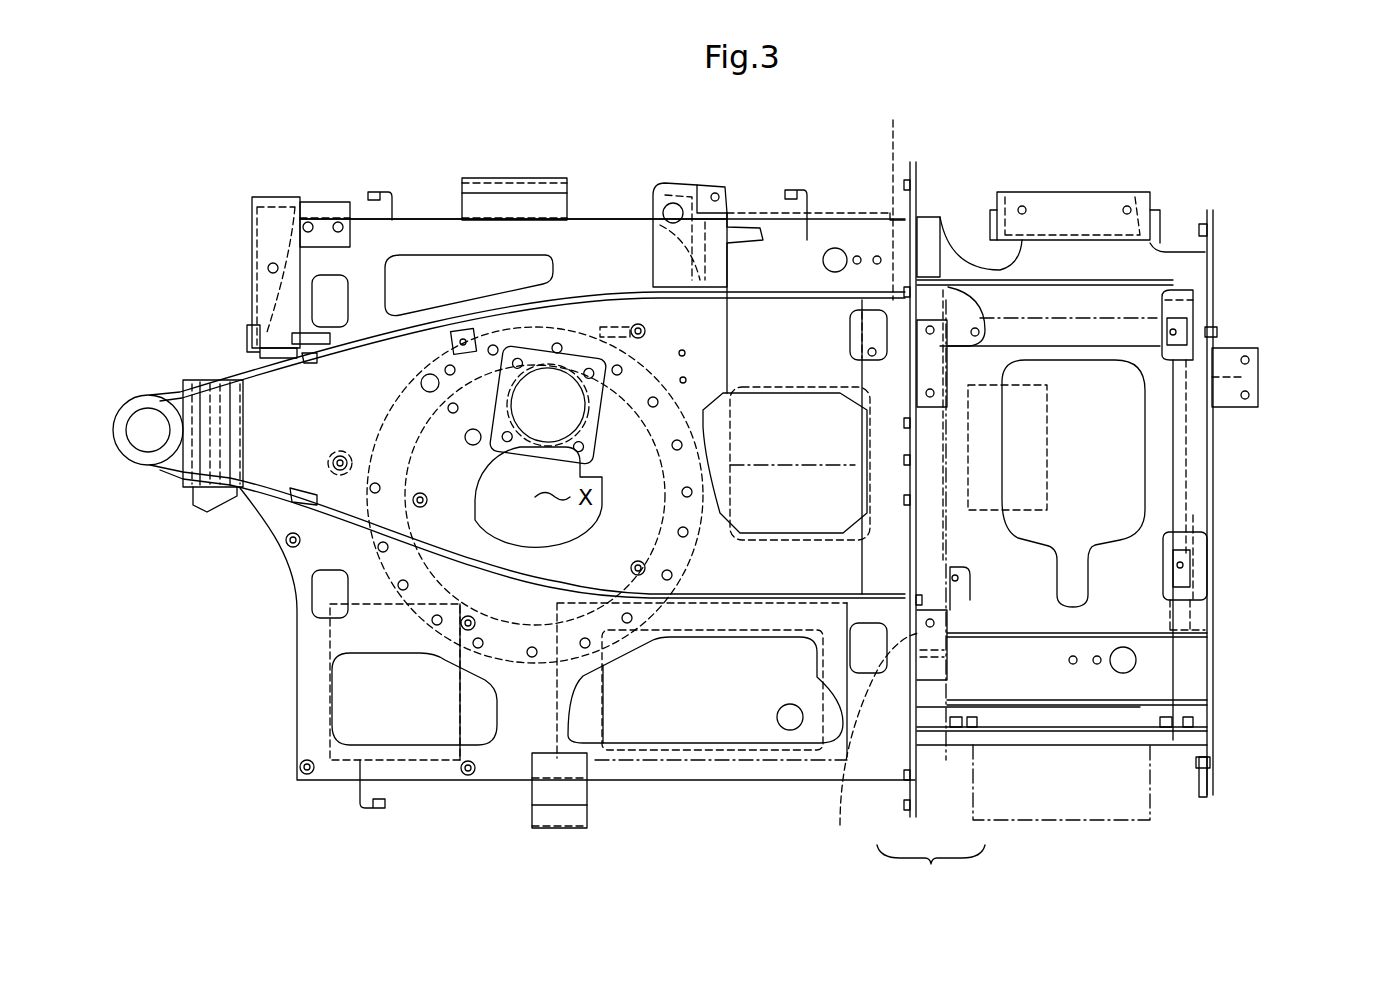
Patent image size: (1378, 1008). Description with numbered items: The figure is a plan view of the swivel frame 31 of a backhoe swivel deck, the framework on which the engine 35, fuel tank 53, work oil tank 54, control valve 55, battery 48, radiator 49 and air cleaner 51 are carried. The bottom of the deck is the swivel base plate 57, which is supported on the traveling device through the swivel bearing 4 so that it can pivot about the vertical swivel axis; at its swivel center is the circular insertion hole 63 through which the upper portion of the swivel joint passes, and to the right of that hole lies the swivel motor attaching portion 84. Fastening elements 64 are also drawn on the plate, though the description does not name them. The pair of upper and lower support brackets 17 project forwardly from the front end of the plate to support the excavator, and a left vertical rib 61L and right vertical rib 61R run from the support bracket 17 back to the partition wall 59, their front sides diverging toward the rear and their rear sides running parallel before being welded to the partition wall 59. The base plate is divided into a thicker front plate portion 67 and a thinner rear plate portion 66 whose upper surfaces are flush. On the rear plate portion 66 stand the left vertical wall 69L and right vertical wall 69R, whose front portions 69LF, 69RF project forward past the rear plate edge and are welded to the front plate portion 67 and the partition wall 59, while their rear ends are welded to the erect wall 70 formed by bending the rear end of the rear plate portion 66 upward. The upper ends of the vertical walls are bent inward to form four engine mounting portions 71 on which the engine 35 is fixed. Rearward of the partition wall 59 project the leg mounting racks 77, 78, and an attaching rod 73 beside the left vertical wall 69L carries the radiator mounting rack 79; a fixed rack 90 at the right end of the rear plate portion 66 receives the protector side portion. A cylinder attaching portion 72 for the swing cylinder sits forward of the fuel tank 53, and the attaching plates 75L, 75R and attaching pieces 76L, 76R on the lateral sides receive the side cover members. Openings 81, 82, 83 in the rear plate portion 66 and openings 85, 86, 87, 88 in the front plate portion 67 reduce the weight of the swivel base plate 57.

The swivel bearing 4 is at (365, 540).
The support bracket 17 is at (190, 393).
The swivel frame 31 is at (798, 160).
The engine 35 is at (1187, 515).
The battery 48 is at (1073, 827).
The radiator 49 is at (1150, 693).
The air cleaner 51 is at (1060, 477).
The fuel tank 53 is at (858, 212).
The work oil tank 54 is at (793, 760).
The control valve 55 is at (330, 780).
The swivel base plate 57 is at (931, 870).
The partition wall 59 is at (913, 240).
The left vertical rib 61L is at (533, 570).
The right vertical rib 61R is at (584, 290).
The insertion hole 63 is at (417, 505).
The mounting bolt 64 is at (637, 322).
The rear plate portion 66 is at (963, 740).
The front plate portion 67 is at (887, 747).
The left vertical wall 69L is at (1053, 640).
The front portion of left vertical wall 69LF is at (866, 742).
The right vertical wall 69R is at (950, 380).
The front portion of right vertical wall 69RF is at (906, 450).
The erect wall 70 is at (1213, 477).
The engine mounting portion 71 is at (985, 320).
The cylinder attaching portion 72 is at (712, 190).
The attaching rod 73 is at (1155, 733).
The left attaching plate 75L is at (567, 815).
The right attaching plate 75R is at (515, 178).
The left attaching piece 76L is at (363, 812).
The right attaching piece 76R is at (390, 192).
The leg mounting rack 77 is at (960, 673).
The leg mounting rack 78 is at (983, 377).
The radiator mounting rack 79 is at (1253, 373).
The opening 81 is at (1140, 426).
The opening 82 is at (1193, 533).
The opening 83 is at (1193, 353).
The swivel motor attaching portion 84 is at (530, 360).
The opening 85 is at (788, 528).
The opening 86 is at (718, 743).
The opening 87 is at (405, 745).
The opening 88 is at (440, 262).
The fixed rack 90 is at (1128, 197).